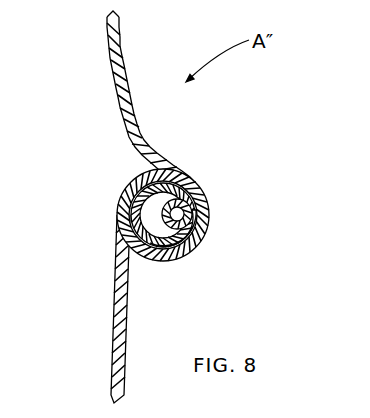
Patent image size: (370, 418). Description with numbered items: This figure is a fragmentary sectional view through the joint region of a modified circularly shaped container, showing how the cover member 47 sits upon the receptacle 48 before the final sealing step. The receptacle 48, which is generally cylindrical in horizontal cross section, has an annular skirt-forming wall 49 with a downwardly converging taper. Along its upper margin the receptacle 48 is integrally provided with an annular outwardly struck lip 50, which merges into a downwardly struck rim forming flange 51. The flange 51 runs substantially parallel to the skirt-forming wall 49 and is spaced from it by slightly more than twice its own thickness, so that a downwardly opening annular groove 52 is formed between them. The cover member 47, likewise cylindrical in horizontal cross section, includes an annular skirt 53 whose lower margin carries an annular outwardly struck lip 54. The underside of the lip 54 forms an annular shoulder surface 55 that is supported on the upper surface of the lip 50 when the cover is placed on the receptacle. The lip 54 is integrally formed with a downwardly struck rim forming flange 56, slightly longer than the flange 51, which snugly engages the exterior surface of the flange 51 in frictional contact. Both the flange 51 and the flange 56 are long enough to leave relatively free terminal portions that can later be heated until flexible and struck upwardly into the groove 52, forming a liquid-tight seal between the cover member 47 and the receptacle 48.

The cover member 47 is at (105, 59).
The receptacle 48 is at (106, 313).
The skirt-forming wall 49 is at (125, 352).
The outwardly struck lip 50 is at (172, 161).
The downwardly struck rim forming flange 51 is at (201, 249).
The annular groove 52 is at (180, 215).
The annular skirt 53 is at (118, 34).
The outwardly struck lip 54 is at (160, 163).
The annular shoulder surface 55 is at (140, 153).
The downwardly struck rim forming flange 56 is at (208, 202).